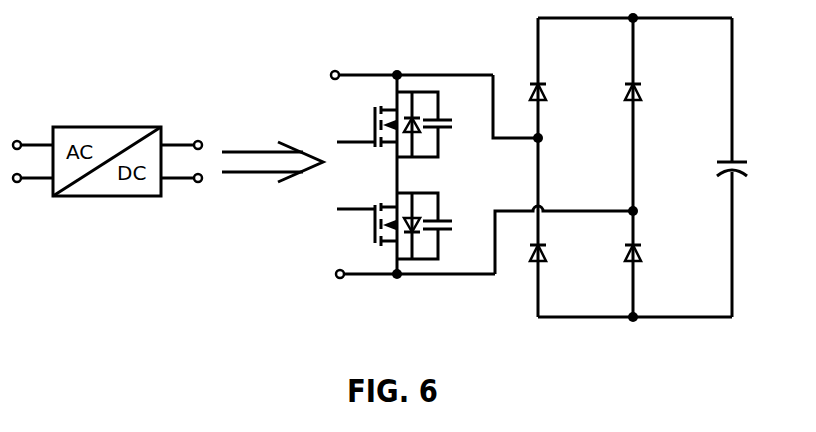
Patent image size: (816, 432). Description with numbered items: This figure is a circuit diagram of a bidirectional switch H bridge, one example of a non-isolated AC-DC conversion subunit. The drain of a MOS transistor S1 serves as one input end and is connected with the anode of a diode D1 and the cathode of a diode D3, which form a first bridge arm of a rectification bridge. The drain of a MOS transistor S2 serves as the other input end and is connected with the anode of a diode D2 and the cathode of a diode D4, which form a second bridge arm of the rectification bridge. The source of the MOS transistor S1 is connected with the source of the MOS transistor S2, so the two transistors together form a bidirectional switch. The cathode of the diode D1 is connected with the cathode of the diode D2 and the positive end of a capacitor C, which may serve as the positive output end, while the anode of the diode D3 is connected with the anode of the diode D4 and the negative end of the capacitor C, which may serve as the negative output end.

The MOS transistor S1 is at (394, 124).
The MOS transistor S2 is at (394, 226).
The diode D1 is at (562, 96).
The diode D2 is at (663, 96).
The diode D3 is at (562, 260).
The diode D4 is at (663, 260).
The capacitor C is at (747, 171).